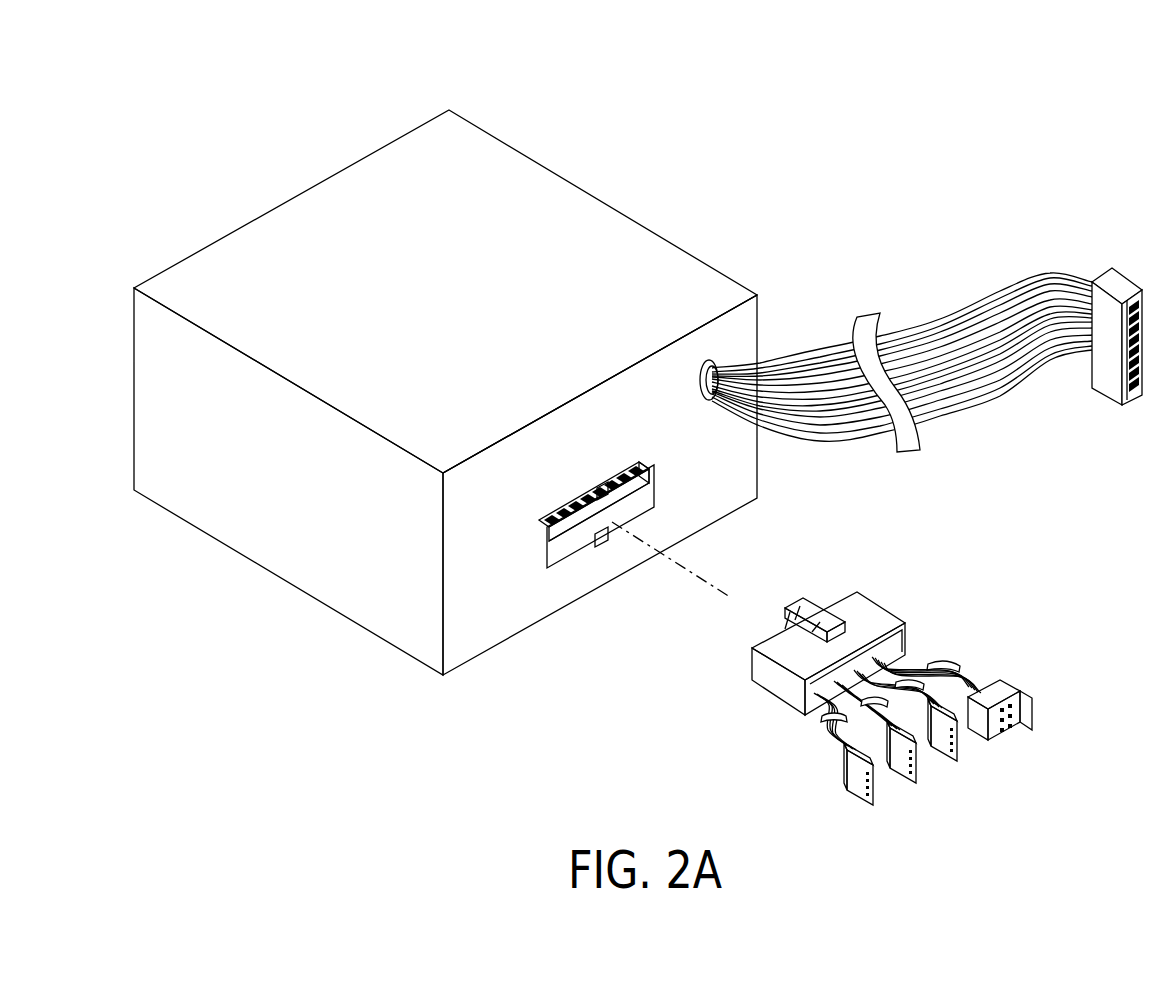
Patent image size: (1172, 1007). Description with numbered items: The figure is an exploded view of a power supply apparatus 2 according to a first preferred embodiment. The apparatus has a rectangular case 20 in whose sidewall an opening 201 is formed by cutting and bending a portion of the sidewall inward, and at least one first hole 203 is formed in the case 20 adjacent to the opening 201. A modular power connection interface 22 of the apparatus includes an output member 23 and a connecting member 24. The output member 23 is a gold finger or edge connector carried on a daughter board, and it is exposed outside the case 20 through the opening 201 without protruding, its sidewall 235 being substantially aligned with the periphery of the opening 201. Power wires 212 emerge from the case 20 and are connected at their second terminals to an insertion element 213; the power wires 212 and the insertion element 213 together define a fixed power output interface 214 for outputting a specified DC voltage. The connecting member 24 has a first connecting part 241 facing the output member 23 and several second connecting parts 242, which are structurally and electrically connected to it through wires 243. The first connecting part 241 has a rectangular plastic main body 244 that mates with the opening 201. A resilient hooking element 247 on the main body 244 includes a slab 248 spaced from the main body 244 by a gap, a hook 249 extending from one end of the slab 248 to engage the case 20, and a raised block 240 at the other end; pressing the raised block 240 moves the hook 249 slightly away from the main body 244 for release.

The power supply apparatus 2 is at (1127, 83).
The case 20 is at (617, 237).
The opening 201 is at (655, 480).
The first hole 203 is at (603, 497).
The modular power connection interface 22 is at (608, 623).
The output member 23 is at (557, 560).
The sidewall 235 is at (622, 499).
The connecting member 24 is at (746, 673).
The raised block 240 is at (812, 632).
The first connecting part 241 is at (923, 685).
The second connecting parts 242 is at (887, 810).
The wires 243 is at (922, 660).
The main body 244 is at (862, 598).
The resilient hooking element 247 is at (683, 727).
The slab 248 is at (795, 620).
The hook 249 is at (785, 629).
The power wires 212 is at (994, 293).
The insertion element 213 is at (1117, 298).
The fixed power output interface 214 is at (921, 293).